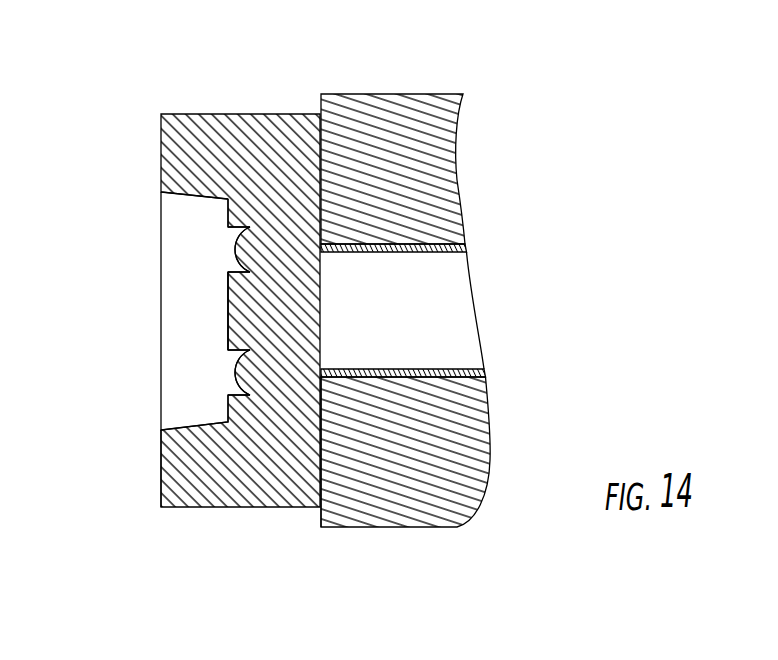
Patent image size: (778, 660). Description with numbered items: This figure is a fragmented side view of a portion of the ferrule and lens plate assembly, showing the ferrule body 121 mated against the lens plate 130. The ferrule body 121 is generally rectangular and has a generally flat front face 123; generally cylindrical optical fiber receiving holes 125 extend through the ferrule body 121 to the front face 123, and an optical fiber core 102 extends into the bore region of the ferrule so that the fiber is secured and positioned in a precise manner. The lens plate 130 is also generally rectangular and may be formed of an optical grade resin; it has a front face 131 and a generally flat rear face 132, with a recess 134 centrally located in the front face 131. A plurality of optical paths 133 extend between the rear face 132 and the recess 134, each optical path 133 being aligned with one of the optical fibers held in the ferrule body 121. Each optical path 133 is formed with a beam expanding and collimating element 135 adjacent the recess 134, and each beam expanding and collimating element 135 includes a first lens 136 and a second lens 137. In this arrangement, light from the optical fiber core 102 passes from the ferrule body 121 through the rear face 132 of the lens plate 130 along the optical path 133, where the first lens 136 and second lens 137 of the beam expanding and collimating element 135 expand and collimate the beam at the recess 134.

The optical fiber core 102 is at (397, 248).
The ferrule body 121 is at (375, 94).
The front face 123 is at (303, 445).
The optical fiber receiving holes 125 is at (433, 252).
The lens plate 130 is at (178, 113).
The front face 131 is at (160, 473).
The rear face 132 is at (323, 487).
The optical paths 133 is at (270, 362).
The recess 134 is at (173, 230).
The beam expanding and collimating element 135 is at (253, 208).
The first lens 136 is at (250, 242).
The second lens 137 is at (228, 375).